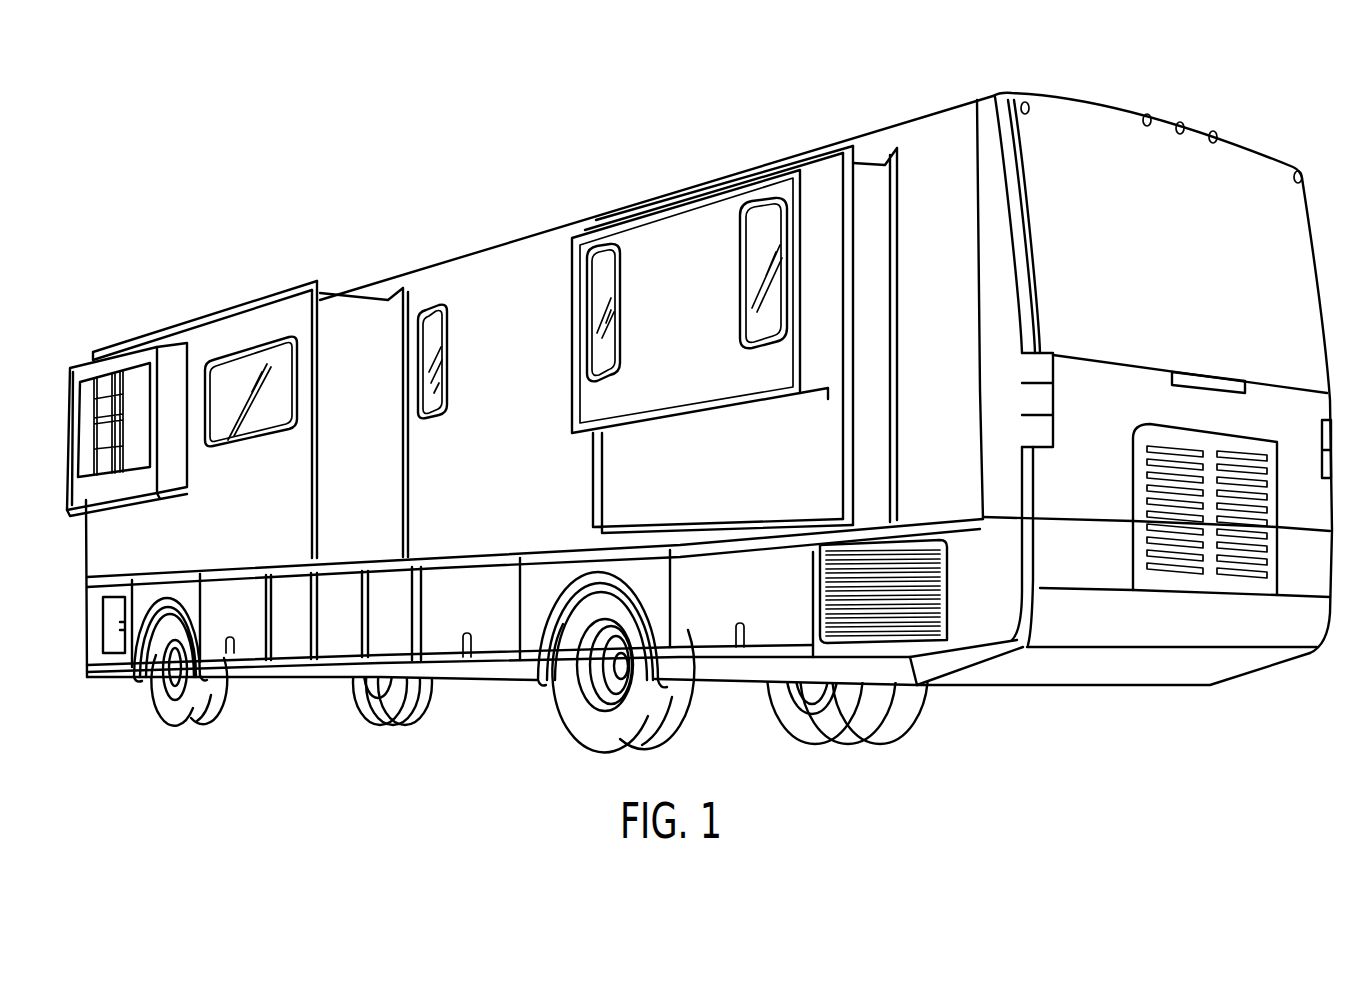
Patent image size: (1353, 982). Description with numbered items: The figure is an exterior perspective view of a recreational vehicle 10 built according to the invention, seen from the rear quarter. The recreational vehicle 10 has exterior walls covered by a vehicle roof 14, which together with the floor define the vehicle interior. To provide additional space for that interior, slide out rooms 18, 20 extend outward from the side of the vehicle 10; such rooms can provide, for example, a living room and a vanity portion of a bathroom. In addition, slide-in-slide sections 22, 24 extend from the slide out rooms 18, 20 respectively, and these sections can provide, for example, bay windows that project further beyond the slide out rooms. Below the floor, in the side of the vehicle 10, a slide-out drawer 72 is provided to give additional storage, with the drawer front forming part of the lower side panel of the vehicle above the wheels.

The recreational vehicle 10 is at (610, 188).
The vehicle roof 14 is at (919, 110).
The slide out room 18 is at (883, 325).
The slide out room 20 is at (275, 292).
The slide-in-slide section 22 is at (697, 207).
The slide-in-slide section 24 is at (83, 367).
The slide-out drawer 72 is at (777, 632).